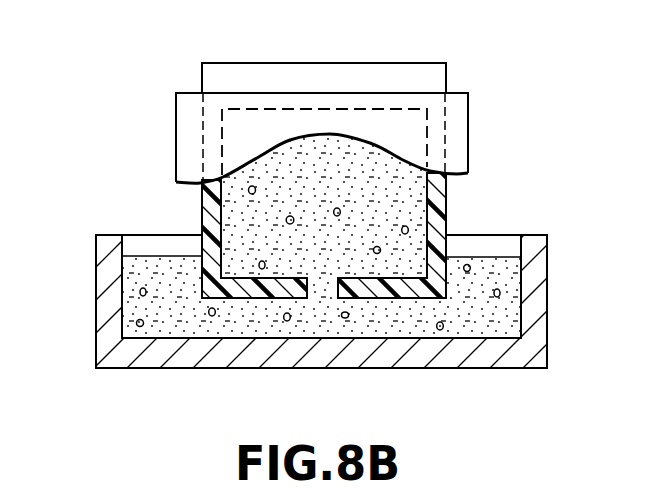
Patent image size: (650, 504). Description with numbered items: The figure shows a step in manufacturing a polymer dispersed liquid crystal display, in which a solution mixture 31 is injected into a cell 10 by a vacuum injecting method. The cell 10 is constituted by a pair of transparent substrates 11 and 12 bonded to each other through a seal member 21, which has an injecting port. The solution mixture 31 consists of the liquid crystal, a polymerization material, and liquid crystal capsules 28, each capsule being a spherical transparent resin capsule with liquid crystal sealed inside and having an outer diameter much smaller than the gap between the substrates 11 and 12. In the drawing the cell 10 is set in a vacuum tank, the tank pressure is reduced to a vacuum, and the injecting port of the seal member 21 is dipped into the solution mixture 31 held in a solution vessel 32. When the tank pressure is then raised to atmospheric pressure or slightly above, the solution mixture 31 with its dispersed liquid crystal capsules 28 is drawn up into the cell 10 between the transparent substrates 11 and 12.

The cell 10 is at (480, 126).
The transparent substrate 11 is at (267, 122).
The transparent substrate 12 is at (413, 75).
The seal member 21 is at (437, 223).
The liquid crystal capsule 28 is at (138, 292).
The solution mixture 31 is at (268, 183).
The solution vessel 32 is at (537, 311).